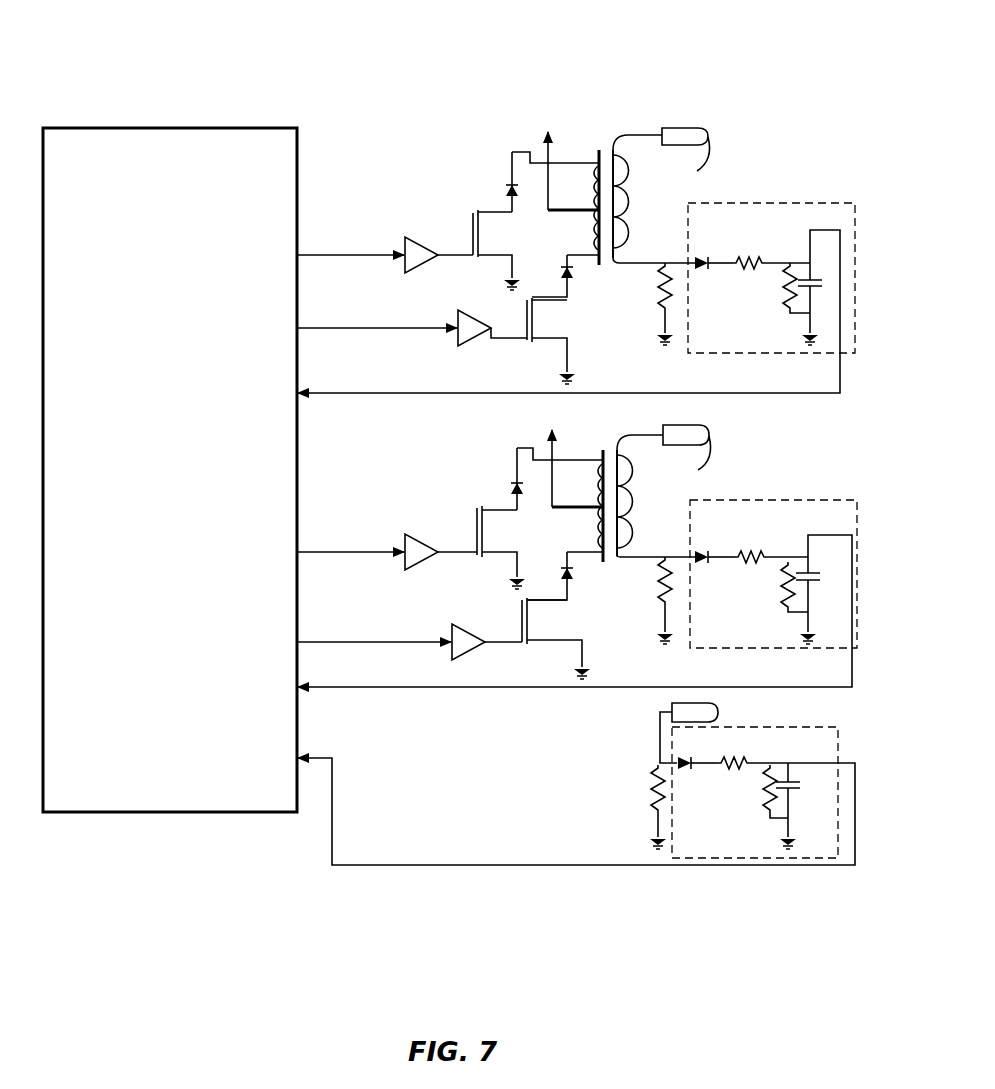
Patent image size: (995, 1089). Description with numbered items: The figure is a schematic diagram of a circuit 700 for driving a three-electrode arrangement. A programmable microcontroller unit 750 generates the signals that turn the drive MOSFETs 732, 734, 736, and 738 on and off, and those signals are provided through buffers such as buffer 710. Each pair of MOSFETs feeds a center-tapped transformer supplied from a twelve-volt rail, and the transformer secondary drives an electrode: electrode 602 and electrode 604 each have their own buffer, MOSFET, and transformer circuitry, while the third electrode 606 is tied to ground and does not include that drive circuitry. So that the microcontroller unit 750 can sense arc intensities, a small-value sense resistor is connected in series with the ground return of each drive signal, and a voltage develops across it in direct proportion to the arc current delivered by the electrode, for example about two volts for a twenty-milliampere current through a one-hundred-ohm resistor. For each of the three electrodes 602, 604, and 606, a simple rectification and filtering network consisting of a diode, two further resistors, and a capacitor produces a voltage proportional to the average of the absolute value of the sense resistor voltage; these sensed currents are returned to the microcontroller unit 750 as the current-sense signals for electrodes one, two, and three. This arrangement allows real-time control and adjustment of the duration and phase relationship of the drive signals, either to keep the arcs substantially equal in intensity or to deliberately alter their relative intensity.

The circuit 700 is at (741, 26).
The buffer 710 is at (367, 247).
The drive MOSFET 732 is at (482, 233).
The drive MOSFET 734 is at (535, 320).
The drive MOSFET 736 is at (486, 532).
The drive MOSFET 738 is at (530, 620).
The electrode 602 is at (683, 153).
The electrode 604 is at (684, 451).
The electrode 606 is at (716, 709).
The microcontroller unit 750 is at (273, 800).